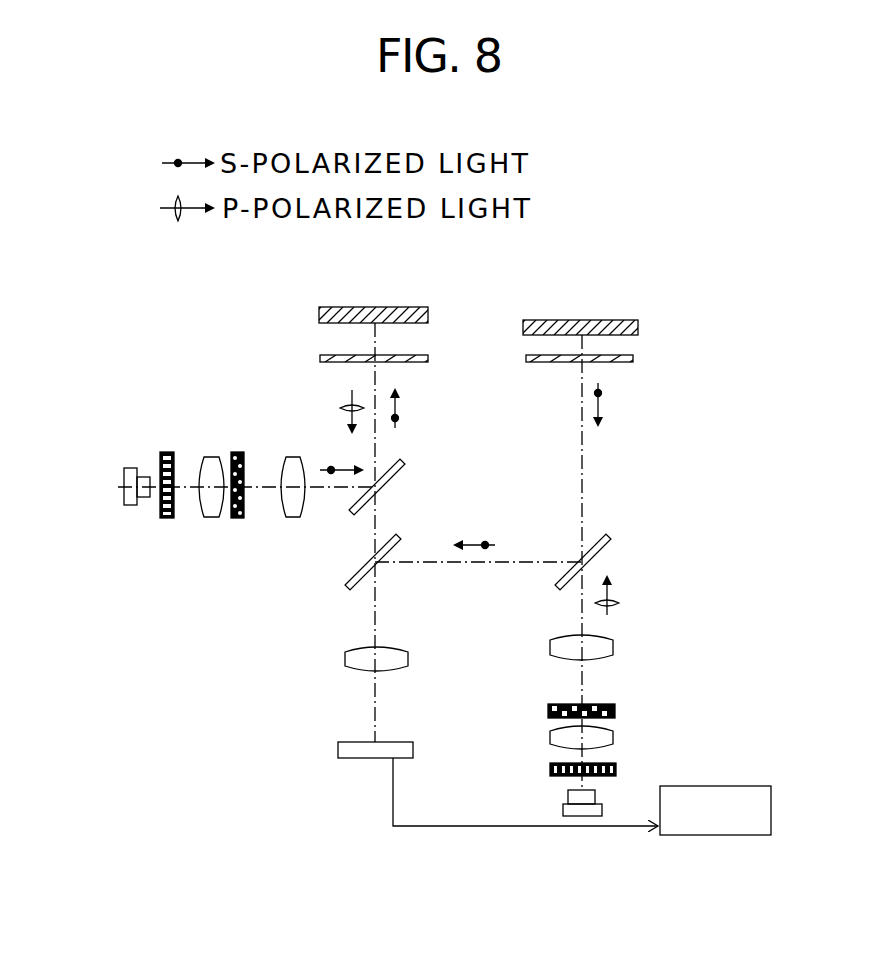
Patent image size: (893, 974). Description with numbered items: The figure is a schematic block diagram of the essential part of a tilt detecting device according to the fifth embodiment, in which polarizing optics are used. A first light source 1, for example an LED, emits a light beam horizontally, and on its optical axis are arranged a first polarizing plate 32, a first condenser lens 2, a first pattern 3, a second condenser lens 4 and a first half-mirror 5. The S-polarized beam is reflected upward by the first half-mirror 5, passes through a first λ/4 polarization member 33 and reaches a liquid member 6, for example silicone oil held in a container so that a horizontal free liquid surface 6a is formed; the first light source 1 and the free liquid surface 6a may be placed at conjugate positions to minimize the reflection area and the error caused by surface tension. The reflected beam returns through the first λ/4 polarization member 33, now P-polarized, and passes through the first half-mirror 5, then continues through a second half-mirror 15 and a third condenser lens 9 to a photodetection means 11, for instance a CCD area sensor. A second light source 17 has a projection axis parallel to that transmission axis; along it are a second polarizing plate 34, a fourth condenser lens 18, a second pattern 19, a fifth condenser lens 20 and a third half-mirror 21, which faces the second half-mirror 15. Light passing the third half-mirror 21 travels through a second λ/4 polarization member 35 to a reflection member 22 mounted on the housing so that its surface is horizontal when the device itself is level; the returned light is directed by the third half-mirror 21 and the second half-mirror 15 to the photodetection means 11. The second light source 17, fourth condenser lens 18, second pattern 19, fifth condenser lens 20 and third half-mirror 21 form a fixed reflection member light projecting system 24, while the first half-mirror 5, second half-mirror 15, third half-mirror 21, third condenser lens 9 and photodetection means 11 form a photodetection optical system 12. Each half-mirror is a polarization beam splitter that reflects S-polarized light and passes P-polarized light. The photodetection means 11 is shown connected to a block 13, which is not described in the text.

The first light source 1 is at (133, 505).
The first condenser lens 2 is at (210, 458).
The first pattern 3 is at (239, 452).
The second condenser lens 4 is at (292, 458).
The first half-mirror 5 is at (405, 482).
The liquid member 6 is at (374, 288).
The free liquid surface 6a is at (355, 307).
The third condenser lens 9 is at (345, 660).
The photodetection means 11 is at (338, 748).
The photodetection optical system 12 is at (325, 617).
The signal processing circuit 13 is at (762, 786).
The second half-mirror 15 is at (352, 572).
The second light source 17 is at (562, 808).
The fourth condenser lens 18 is at (615, 740).
The second pattern 19 is at (617, 712).
The fifth condenser lens 20 is at (615, 645).
The third half-mirror 21 is at (605, 545).
The reflection member 22 is at (620, 320).
The fixed reflection member light projecting system 24 is at (650, 656).
The first polarizing plate 32 is at (162, 452).
The first λ/4 polarization member 33 is at (430, 358).
The second polarizing plate 34 is at (550, 770).
The second λ/4 polarization member 35 is at (635, 358).